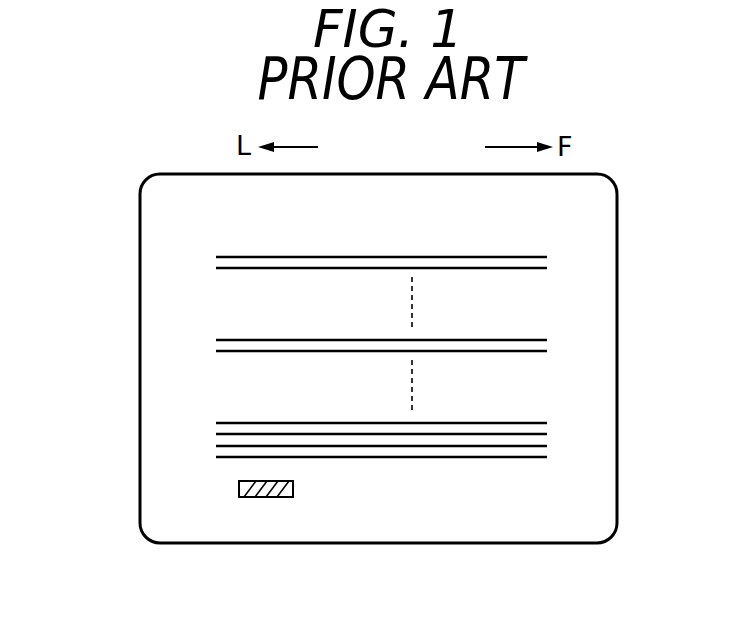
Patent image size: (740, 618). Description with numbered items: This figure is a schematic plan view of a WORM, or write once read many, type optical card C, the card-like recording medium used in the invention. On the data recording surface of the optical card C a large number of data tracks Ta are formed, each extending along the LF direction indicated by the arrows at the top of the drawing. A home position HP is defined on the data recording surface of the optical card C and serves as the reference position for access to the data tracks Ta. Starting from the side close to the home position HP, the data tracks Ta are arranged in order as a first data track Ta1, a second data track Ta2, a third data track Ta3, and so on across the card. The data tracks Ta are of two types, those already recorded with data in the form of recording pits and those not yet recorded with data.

The optical card C is at (617, 275).
The data tracks Ta is at (532, 340).
The third data track Ta3 is at (212, 434).
The second data track Ta2 is at (212, 447).
The first data track Ta1 is at (212, 459).
The home position HP is at (263, 498).